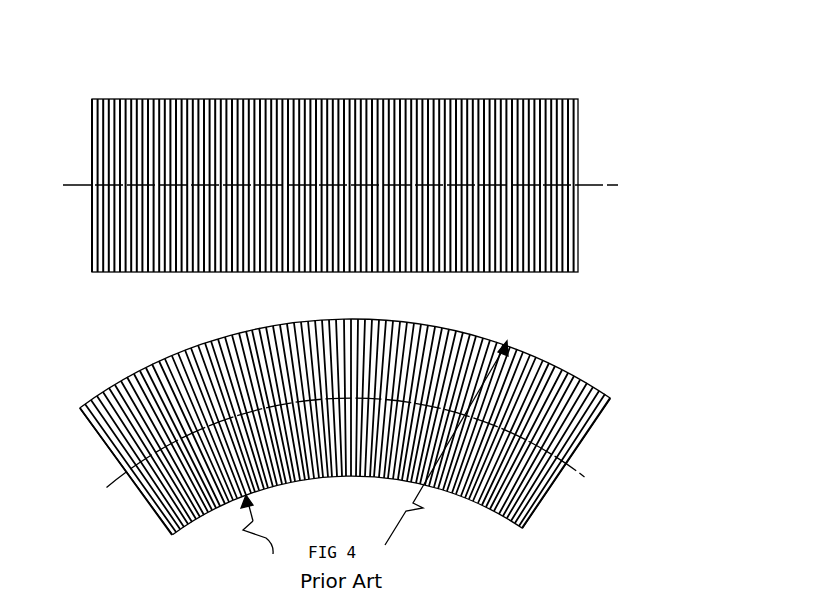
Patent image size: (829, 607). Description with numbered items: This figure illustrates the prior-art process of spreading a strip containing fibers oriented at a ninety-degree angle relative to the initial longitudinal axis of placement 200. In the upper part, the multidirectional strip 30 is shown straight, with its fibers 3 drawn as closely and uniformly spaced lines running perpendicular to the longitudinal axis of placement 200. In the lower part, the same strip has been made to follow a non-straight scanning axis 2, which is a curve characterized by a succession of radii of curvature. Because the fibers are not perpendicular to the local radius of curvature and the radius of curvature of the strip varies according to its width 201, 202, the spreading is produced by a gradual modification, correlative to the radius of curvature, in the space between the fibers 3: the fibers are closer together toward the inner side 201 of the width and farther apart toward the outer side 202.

The scanning axis 2 is at (577, 470).
The fibers 3 is at (213, 109).
The multidirectional strip 30 is at (668, 85).
The longitudinal axis of placement 200 is at (665, 247).
The width of the wing 201 is at (265, 546).
The width of the wing 202 is at (467, 548).